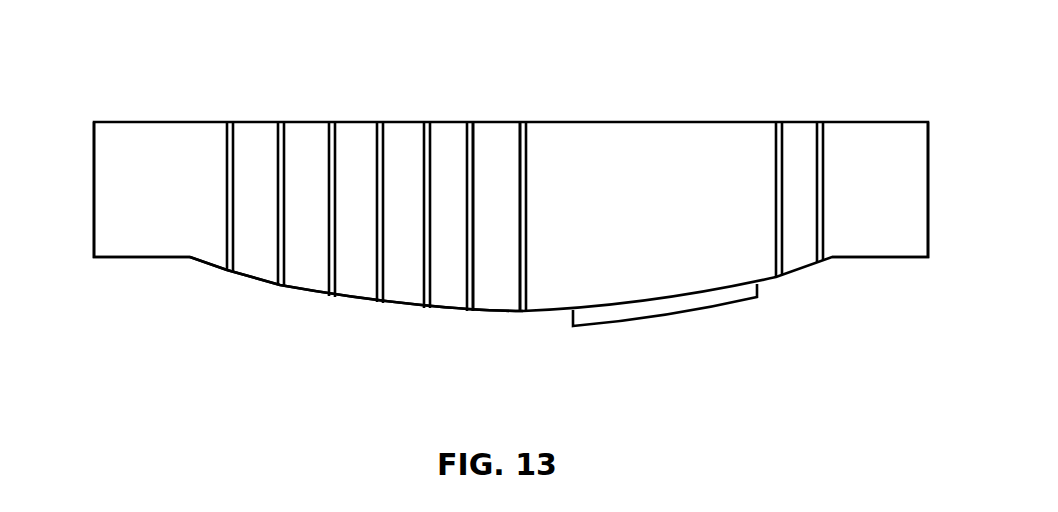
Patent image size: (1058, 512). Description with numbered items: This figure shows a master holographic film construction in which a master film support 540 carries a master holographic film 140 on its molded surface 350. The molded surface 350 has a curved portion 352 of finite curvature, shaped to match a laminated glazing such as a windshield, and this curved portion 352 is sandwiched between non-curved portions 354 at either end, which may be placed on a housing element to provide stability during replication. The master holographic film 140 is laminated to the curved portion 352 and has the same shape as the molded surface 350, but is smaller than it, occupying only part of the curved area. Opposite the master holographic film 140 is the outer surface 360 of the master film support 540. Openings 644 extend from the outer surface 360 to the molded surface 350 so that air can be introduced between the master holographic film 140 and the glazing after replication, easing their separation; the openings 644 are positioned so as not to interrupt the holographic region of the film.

The outer surface 360 is at (860, 121).
The openings 644 is at (330, 145).
The master film support 540 is at (496, 147).
The non-curved portions 354 is at (118, 260).
The molded surface 350 is at (208, 270).
The curved portion 352 is at (438, 310).
The master holographic film 140 is at (662, 309).